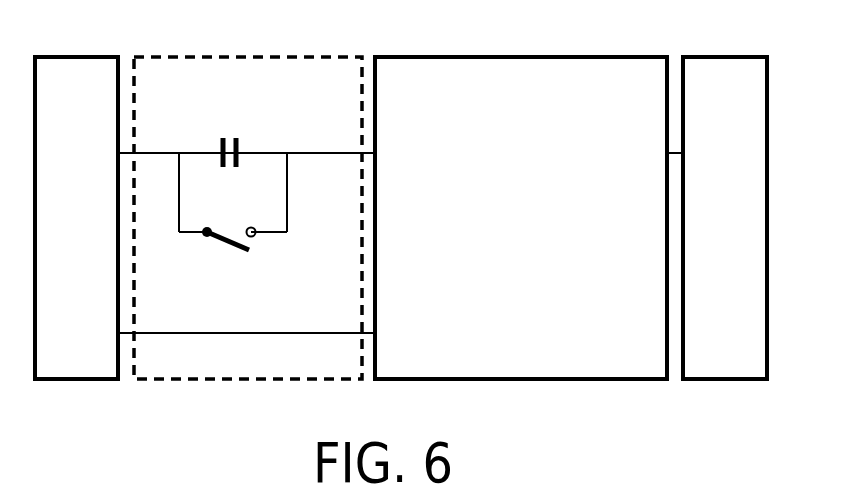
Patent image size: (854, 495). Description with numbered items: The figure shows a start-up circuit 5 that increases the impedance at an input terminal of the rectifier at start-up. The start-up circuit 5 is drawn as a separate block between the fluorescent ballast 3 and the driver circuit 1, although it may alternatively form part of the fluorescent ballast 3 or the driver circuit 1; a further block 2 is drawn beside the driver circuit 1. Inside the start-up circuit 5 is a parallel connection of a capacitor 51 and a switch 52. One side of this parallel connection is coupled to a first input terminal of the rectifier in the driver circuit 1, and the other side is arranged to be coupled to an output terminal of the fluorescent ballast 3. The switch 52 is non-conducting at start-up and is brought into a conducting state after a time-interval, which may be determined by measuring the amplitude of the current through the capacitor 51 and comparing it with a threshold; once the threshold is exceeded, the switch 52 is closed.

The driver circuit 1 is at (403, 90).
The second unit 2 is at (734, 90).
The fluorescent ballast 3 is at (84, 90).
The start-up circuit 5 is at (162, 90).
The capacitor 51 is at (234, 140).
The switch 52 is at (225, 240).